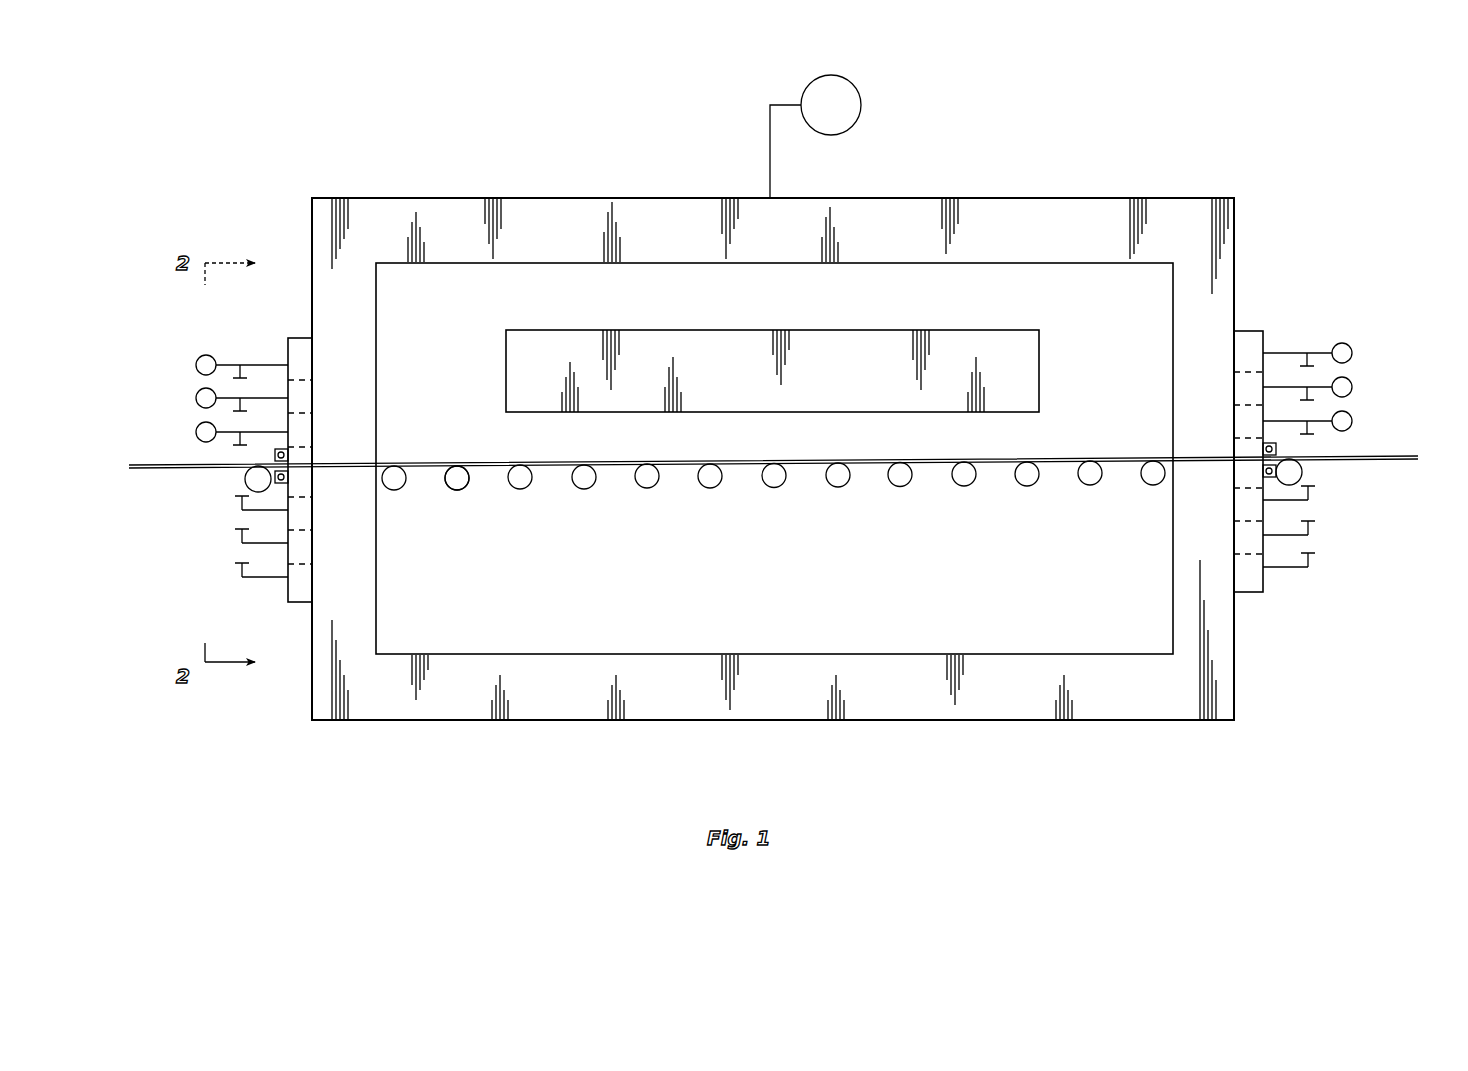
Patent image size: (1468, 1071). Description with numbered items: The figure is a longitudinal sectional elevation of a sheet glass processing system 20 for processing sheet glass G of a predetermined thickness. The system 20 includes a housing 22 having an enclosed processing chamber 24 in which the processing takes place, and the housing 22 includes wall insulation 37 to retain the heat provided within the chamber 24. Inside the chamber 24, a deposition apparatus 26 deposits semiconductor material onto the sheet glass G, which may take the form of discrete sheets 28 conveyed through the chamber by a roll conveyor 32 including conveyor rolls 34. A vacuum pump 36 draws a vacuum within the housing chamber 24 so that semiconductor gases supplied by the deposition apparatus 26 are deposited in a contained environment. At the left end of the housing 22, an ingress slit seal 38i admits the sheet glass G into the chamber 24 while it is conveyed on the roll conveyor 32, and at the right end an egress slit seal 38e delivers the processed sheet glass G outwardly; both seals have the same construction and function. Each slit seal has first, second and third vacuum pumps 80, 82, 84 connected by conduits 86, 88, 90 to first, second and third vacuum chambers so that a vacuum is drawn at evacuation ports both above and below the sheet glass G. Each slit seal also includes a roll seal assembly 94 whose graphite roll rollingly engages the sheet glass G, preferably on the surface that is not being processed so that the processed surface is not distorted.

The processing system 20 is at (775, 388).
The housing 22 is at (615, 197).
The processing chamber 24 is at (958, 266).
The deposition apparatus 26 is at (930, 328).
The discrete sheets 28 is at (562, 488).
The roll conveyor 32 is at (450, 498).
The conveyor rolls 34 is at (655, 488).
The vacuum pump 36 is at (862, 103).
The wall insulation 37 is at (674, 212).
The ingress slit seal 38i is at (297, 337).
The egress slit seal 38e is at (1250, 330).
The first vacuum pump 80 is at (196, 432).
The second vacuum pump 82 is at (196, 398).
The third vacuum pump 84 is at (196, 365).
The conduit 86 is at (248, 440).
The conduit 88 is at (246, 409).
The conduit 90 is at (238, 378).
The roll seal assembly 94 is at (275, 456).
The sheet glass G is at (160, 472).